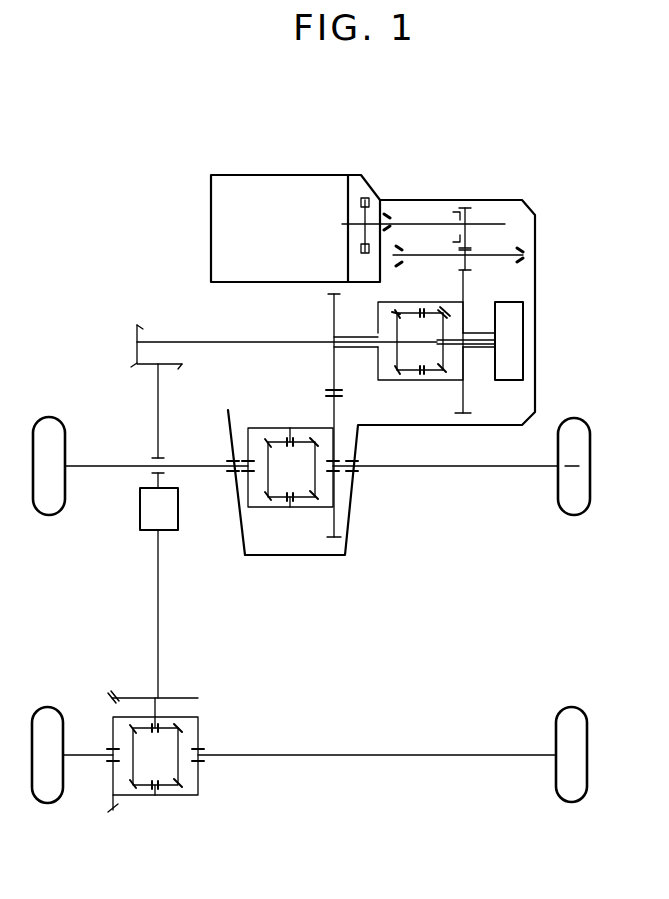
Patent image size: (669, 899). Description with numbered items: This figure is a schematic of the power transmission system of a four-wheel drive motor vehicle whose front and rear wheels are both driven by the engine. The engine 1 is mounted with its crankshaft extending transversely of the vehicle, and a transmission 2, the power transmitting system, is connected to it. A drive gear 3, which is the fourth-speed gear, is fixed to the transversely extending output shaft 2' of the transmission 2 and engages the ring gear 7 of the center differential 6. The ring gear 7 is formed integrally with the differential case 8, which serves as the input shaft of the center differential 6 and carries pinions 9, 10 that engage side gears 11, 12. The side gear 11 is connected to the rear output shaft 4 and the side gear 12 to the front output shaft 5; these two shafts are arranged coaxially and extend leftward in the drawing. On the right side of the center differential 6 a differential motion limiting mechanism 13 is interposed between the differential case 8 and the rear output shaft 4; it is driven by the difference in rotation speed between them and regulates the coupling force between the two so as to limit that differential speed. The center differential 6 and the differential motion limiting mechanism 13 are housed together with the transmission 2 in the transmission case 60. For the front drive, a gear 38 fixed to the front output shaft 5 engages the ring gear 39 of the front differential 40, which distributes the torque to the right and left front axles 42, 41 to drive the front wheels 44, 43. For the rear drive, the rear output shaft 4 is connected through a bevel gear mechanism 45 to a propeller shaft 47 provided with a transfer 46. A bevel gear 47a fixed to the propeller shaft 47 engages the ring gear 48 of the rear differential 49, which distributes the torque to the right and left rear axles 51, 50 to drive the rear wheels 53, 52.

The engine 1 is at (275, 175).
The transmission 2 is at (381, 352).
The output shaft 2' is at (458, 247).
The drive gear 3 is at (470, 263).
The rear output shaft 4 is at (263, 340).
The front output shaft 5 is at (360, 337).
The center differential 6 is at (447, 390).
The ring gear 7 is at (470, 291).
The differential case 8 is at (421, 312).
The pinion 9 is at (397, 312).
The pinion 10 is at (436, 377).
The side gear 11 is at (441, 323).
The side gear 12 is at (356, 361).
The differential motion limiting mechanism 13 is at (513, 322).
The gear 38 is at (334, 362).
The ring gear 39 is at (342, 397).
The front differential 40 is at (291, 420).
The left front axle 41 is at (185, 466).
The right front axle 42 is at (468, 466).
The left front wheel 43 is at (66, 418).
The right front wheel 44 is at (590, 447).
The bevel gear mechanism 45 is at (136, 331).
The transfer 46 is at (178, 511).
The propeller shaft 47 is at (157, 421).
The bevel gear 47a is at (192, 698).
The ring gear 48 is at (113, 722).
The rear differential 49 is at (206, 747).
The left rear axle 50 is at (83, 756).
The right rear axle 51 is at (345, 755).
The left rear wheel 52 is at (50, 804).
The right rear wheel 53 is at (587, 733).
The transmission case 60 is at (535, 343).